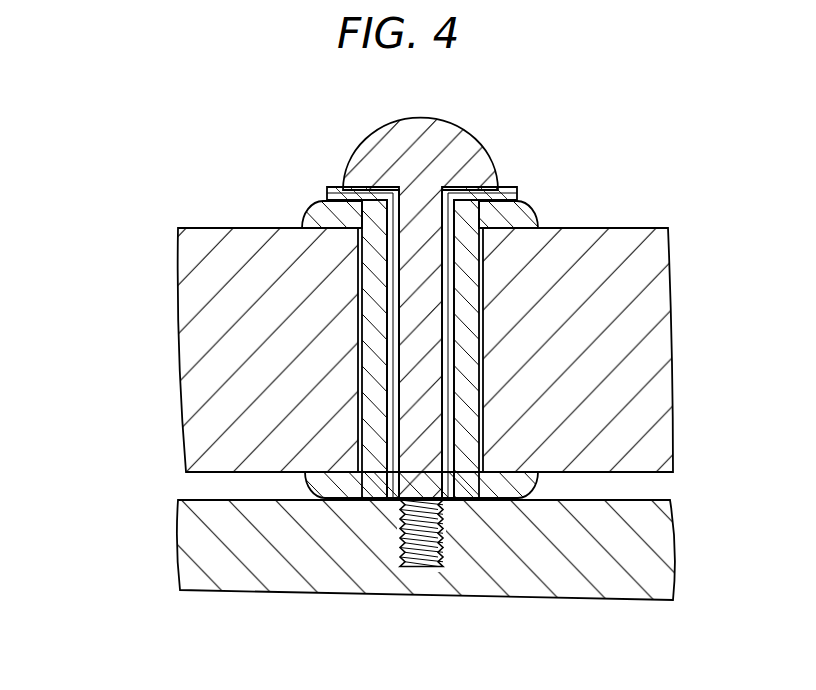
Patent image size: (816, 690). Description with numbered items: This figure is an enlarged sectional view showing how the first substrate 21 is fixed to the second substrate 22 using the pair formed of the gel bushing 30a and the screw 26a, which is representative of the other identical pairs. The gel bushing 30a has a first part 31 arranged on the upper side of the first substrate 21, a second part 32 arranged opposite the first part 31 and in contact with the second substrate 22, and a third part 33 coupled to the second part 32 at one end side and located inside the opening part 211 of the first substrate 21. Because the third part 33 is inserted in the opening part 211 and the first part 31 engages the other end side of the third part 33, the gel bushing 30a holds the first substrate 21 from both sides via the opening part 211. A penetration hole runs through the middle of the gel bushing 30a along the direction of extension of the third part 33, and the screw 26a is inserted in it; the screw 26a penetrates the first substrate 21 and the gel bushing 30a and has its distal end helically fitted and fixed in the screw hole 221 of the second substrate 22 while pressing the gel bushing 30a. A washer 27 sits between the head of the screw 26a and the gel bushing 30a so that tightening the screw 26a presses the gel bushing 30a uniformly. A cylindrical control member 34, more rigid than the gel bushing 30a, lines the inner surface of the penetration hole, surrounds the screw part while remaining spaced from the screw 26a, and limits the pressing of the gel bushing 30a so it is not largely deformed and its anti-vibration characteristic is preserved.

The first substrate 21 is at (672, 333).
The opening part 211 is at (590, 228).
The second substrate 22 is at (673, 556).
The screw hole 221 is at (417, 567).
The screw 26a is at (427, 118).
The washer 27 is at (516, 188).
The gel bushing 30a is at (92, 186).
The first part 31 is at (312, 203).
The second part 32 is at (322, 487).
The third part 33 is at (360, 342).
The control member 34 is at (338, 187).